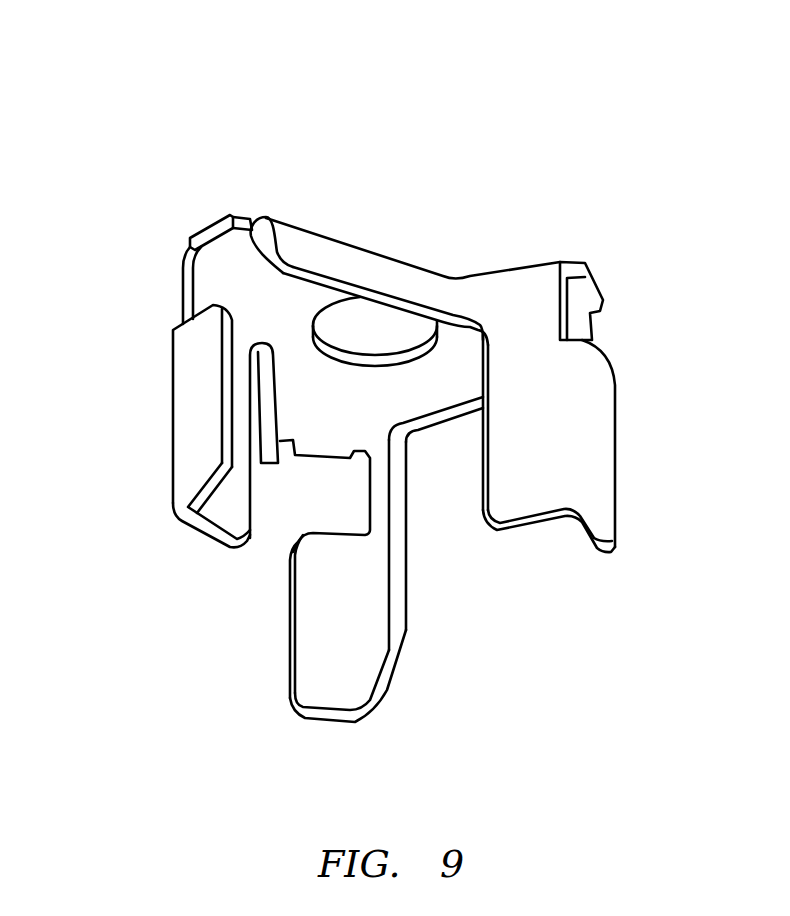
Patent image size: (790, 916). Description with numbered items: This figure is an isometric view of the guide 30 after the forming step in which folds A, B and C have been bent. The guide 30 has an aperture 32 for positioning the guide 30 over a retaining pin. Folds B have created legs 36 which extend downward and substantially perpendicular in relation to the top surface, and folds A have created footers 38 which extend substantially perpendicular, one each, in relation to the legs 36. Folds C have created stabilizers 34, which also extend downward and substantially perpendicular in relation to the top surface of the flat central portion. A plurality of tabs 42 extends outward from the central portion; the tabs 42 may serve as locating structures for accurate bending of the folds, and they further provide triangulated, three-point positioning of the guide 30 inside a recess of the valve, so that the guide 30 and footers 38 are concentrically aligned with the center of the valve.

The guide 30 is at (177, 128).
The aperture 32 is at (397, 350).
The stabilizer 34 is at (348, 258).
The leg 36 is at (216, 517).
The footer 38 is at (193, 408).
The tab 42 is at (207, 226).